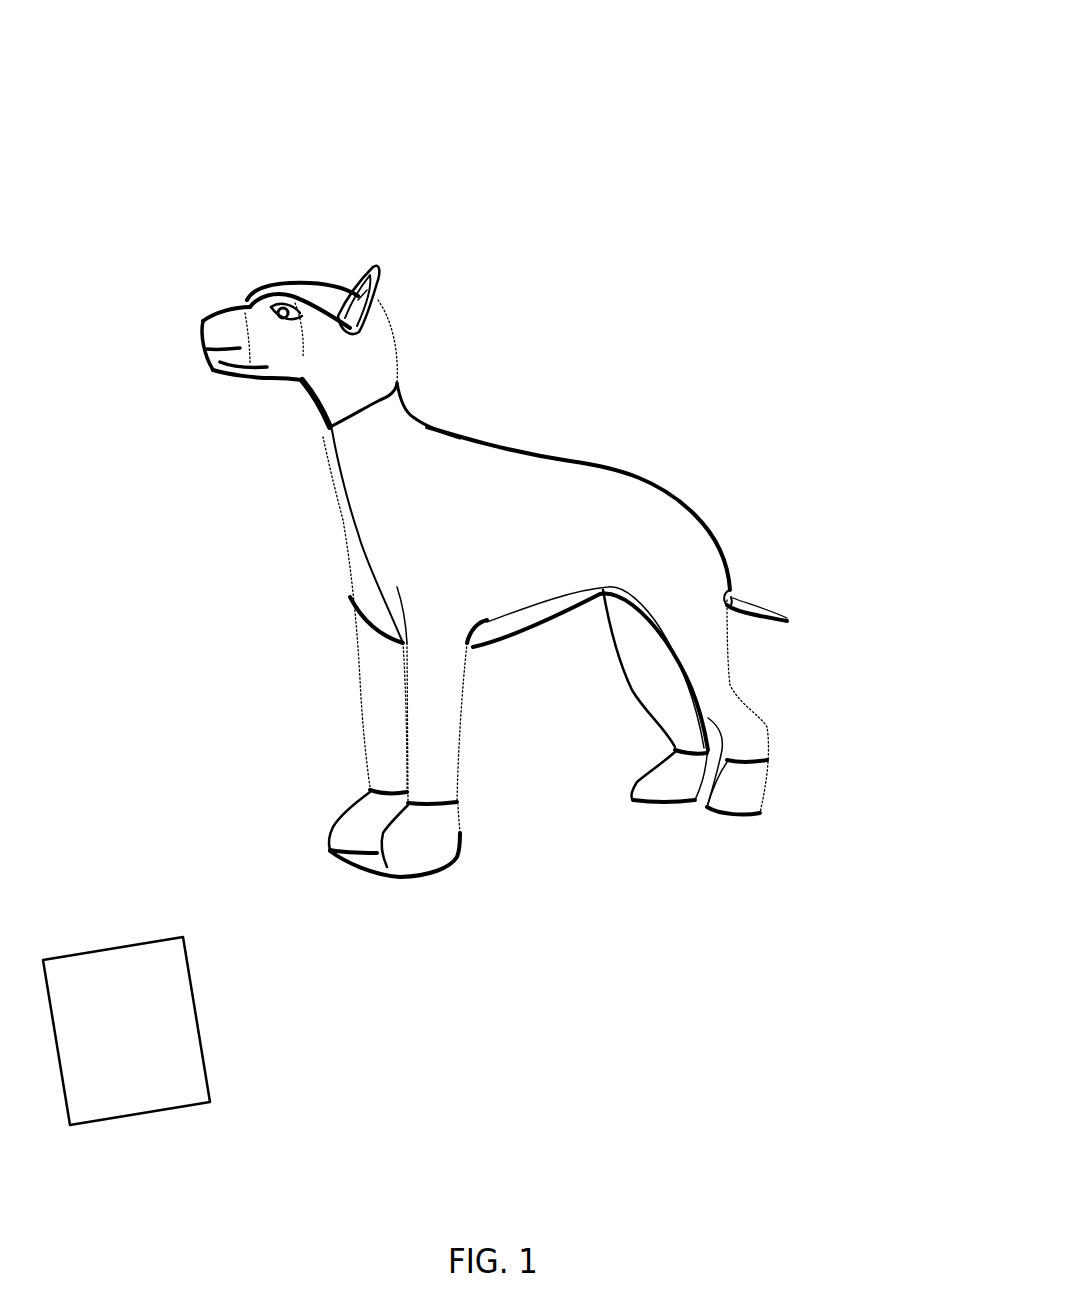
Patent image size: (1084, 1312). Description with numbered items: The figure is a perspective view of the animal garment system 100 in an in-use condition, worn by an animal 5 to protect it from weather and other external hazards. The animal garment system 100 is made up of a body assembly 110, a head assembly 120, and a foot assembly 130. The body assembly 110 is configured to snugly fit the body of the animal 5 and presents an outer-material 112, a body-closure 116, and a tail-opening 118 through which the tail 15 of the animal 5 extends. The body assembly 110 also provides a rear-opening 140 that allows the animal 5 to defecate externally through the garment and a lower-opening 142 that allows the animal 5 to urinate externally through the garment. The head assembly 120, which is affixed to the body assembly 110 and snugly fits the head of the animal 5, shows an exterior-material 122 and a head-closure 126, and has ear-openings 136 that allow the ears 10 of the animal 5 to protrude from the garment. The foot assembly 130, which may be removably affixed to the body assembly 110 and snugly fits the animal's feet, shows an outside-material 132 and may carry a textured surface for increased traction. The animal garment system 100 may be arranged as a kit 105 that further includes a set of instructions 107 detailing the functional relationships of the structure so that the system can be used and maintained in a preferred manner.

The animal garment system 100 is at (846, 45).
The kit 105 is at (846, 92).
The animal 5 is at (584, 350).
The ears 10 is at (367, 273).
The tail 15 is at (787, 620).
The set of instructions 107 is at (197, 1010).
The body assembly 110 is at (553, 477).
The outer-material 112 is at (532, 554).
The body-closure 116 is at (510, 640).
The tail-opening 118 is at (733, 593).
The head assembly 120 is at (377, 348).
The exterior-material 122 is at (370, 384).
The head-closure 126 is at (310, 410).
The foot assembly 130 is at (333, 853).
The outside-material 132 is at (373, 854).
The ear-openings 136 is at (340, 317).
The rear-opening 140 is at (730, 633).
The lower-opening 142 is at (607, 593).